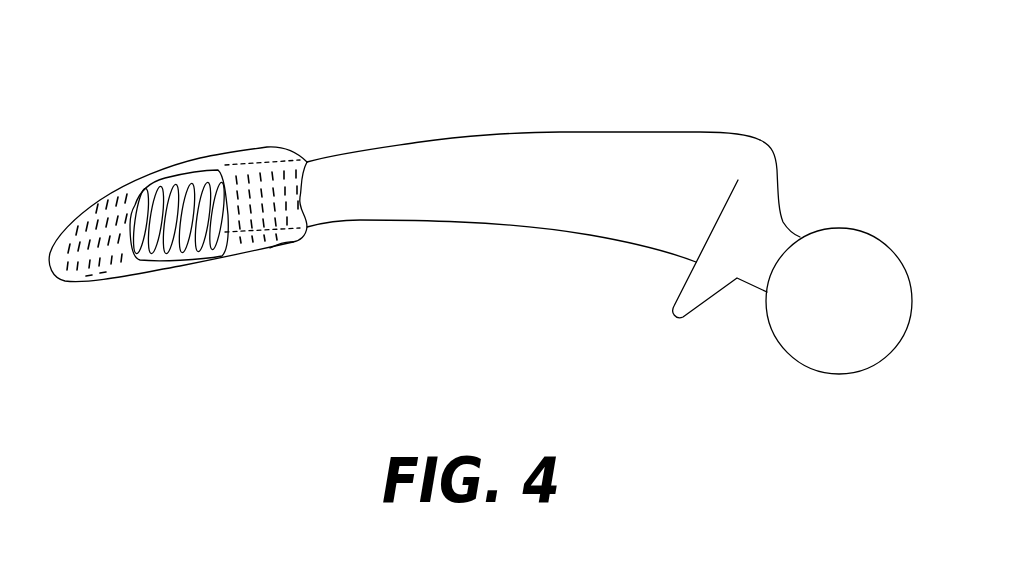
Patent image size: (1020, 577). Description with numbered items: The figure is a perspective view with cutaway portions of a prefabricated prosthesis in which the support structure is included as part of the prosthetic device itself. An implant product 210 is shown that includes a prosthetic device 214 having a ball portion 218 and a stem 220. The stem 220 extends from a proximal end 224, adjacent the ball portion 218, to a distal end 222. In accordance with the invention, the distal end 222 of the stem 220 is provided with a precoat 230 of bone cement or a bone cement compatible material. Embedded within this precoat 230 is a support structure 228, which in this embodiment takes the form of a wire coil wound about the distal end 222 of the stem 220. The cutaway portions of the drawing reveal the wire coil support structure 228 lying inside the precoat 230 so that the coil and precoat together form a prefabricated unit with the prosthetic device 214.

The implant product 210 is at (853, 138).
The prosthetic device 214 is at (520, 225).
The ball portion 218 is at (828, 357).
The stem 220 is at (485, 155).
The distal end 222 is at (167, 177).
The proximal end 224 is at (693, 158).
The support structure 228 is at (150, 260).
The precoat of bone cement or bone cement compatible material 230 is at (288, 243).